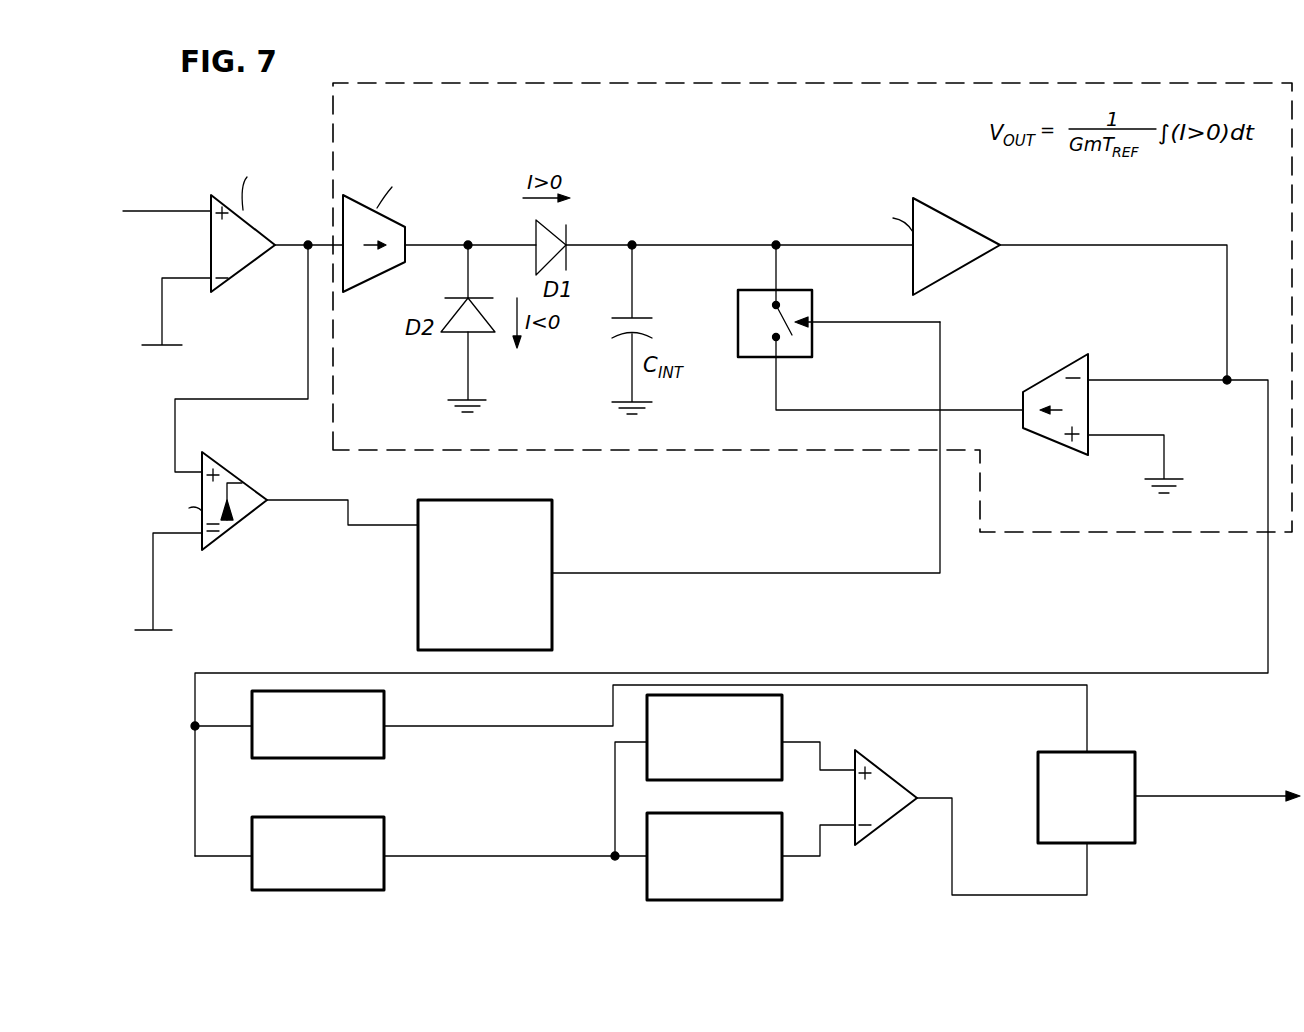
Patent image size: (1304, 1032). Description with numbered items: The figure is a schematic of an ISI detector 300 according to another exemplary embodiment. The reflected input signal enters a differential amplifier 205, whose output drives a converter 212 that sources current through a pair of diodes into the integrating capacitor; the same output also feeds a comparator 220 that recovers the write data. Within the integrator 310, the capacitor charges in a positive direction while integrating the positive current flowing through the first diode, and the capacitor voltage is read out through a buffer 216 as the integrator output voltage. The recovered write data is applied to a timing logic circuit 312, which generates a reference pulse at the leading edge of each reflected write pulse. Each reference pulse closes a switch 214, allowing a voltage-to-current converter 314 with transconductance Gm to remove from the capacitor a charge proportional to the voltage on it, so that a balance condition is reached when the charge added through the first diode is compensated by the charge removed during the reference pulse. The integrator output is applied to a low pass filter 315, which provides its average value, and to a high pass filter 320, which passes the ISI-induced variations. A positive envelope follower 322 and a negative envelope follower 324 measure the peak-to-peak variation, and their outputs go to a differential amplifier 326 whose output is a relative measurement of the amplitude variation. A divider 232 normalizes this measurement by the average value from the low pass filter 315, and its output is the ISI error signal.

The ISI detector 300 is at (143, 173).
The differential amplifier 205 is at (228, 285).
The converter 212 is at (378, 278).
The switch 214 is at (737, 303).
The buffer 216 is at (942, 208).
The comparator 220 is at (228, 470).
The integrator 310 is at (647, 456).
The timing logic circuit 312 is at (552, 618).
The voltage-to-current converter 314 is at (1057, 447).
The low pass filter 315 is at (384, 741).
The high pass filter 320 is at (384, 871).
The positive envelope follower 322 is at (782, 717).
The negative envelope follower 324 is at (782, 878).
The differential amplifier 326 is at (877, 767).
The divider 232 is at (1038, 777).